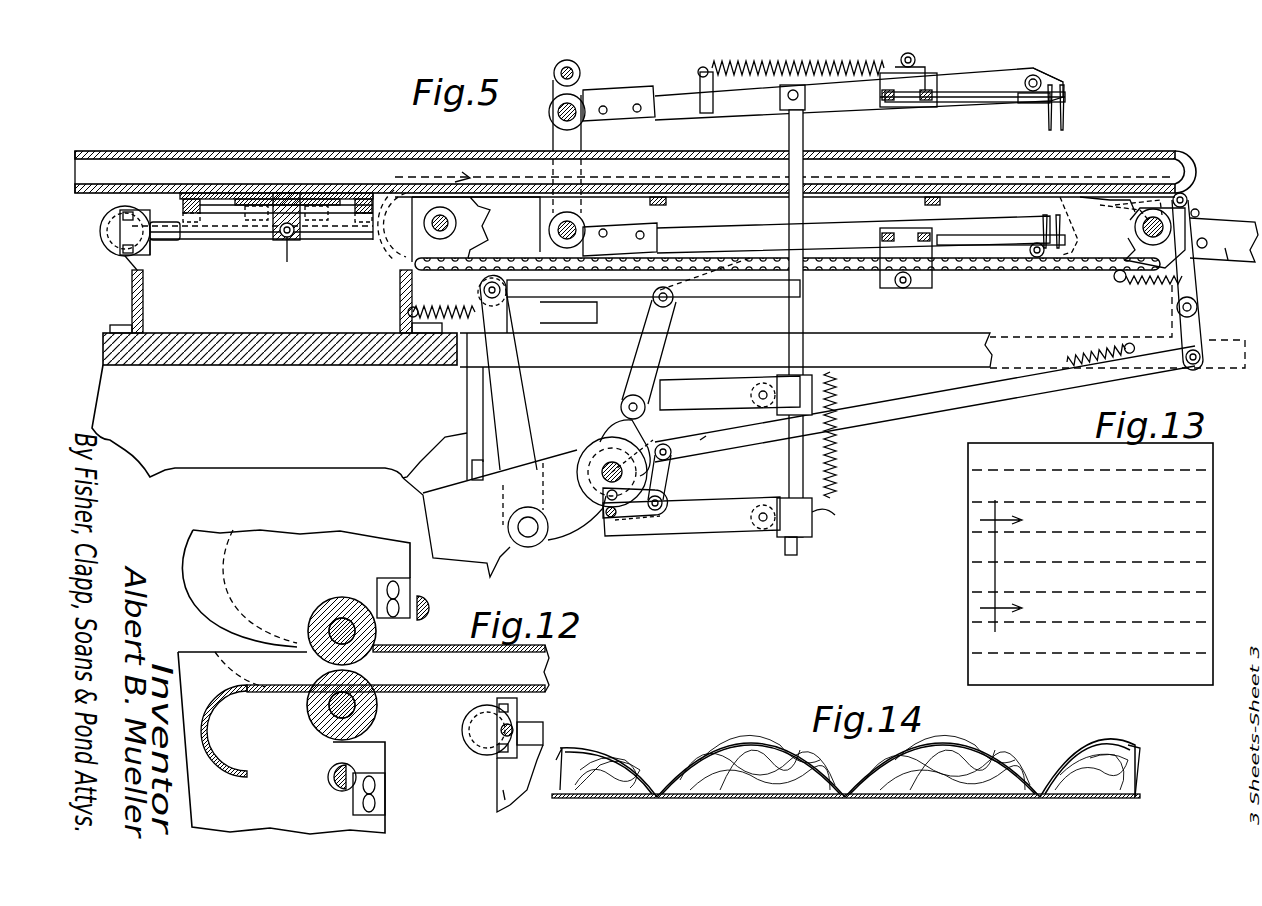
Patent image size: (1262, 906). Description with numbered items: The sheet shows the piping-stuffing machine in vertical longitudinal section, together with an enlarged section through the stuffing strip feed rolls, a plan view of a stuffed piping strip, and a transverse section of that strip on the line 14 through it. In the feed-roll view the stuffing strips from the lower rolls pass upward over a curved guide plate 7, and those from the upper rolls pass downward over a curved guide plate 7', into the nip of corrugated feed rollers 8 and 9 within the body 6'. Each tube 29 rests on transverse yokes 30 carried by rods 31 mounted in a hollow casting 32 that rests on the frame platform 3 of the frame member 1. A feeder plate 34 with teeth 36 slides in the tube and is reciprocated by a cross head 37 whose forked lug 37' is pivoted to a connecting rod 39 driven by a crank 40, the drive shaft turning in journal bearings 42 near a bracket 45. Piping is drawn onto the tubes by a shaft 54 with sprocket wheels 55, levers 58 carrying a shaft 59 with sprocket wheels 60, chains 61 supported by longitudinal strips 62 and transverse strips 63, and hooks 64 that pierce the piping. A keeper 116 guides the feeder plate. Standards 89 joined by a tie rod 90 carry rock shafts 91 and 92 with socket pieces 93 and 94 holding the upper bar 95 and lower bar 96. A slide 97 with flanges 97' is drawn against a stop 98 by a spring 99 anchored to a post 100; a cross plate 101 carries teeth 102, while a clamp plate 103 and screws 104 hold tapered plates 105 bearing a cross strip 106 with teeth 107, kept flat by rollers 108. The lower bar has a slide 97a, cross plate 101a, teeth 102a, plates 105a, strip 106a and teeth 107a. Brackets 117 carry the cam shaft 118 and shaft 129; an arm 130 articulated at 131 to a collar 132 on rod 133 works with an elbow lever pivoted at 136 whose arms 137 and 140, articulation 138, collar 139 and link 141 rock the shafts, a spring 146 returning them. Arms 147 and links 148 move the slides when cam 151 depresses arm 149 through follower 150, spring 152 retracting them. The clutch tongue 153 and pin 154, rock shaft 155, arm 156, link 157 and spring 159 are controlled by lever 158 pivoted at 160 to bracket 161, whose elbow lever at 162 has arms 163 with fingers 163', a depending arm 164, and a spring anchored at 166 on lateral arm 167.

In FIG. 5, the frame member 1 is at (458, 402).
In FIG. 5, the frame platform 3 is at (392, 366).
In FIG. 12, the body wall 6' is at (284, 577).
In FIG. 12, the curved guide plate 7 is at (281, 743).
In FIG. 12, the curved guide plate 7' is at (256, 608).
In FIG. 12, the corrugated feed roller 8 is at (340, 598).
In FIG. 12, the corrugated feed roller 9 is at (372, 712).
In FIG. 13, the main gear 14 is at (1022, 566).
In FIG. 5, the tube 29 is at (305, 151).
In FIG. 12, the tube 29 is at (435, 645).
In FIG. 5, the transverse yoke 30 is at (362, 198).
In FIG. 5, the rod 31 is at (218, 214).
In FIG. 5, the hollow casting 32 is at (255, 267).
In FIG. 12, the hollow casting 32 is at (503, 792).
In FIG. 5, the feeder plate 34 is at (232, 192).
In FIG. 5, the teeth 36 is at (340, 182).
In FIG. 5, the cross head 37 is at (297, 229).
In FIG. 5, the forked depending lug 37' is at (298, 263).
In FIG. 5, the connecting rod 39 is at (238, 240).
In FIG. 12, the connecting rod 39 is at (543, 730).
In FIG. 5, the crank 40 is at (104, 245).
In FIG. 12, the crank 40 is at (470, 717).
In FIG. 5, the journal bearing 42 is at (118, 262).
In FIG. 12, the journal bearing 42 is at (494, 762).
In FIG. 5, the bracket 45 is at (120, 222).
In FIG. 12, the bracket 45 is at (497, 732).
In FIG. 5, the shaft 54 is at (456, 220).
In FIG. 5, the sprocket wheel 55 is at (478, 236).
In FIG. 5, the lever 58 is at (1233, 262).
In FIG. 5, the shaft 59 is at (1135, 230).
In FIG. 5, the sprocket wheel 60 is at (1125, 252).
In FIG. 5, the sprocket chain 61 is at (505, 258).
In FIG. 5, the longitudinal strip 62 is at (760, 257).
In FIG. 5, the transverse strip 63 is at (660, 196).
In FIG. 5, the hook 64 is at (470, 178).
In FIG. 5, the standard 89 is at (582, 136).
In FIG. 5, the tie rod 90 is at (555, 70).
In FIG. 5, the upper rock shaft 91 is at (549, 110).
In FIG. 5, the lower rock shaft 92 is at (552, 222).
In FIG. 5, the socket piece 93 is at (620, 92).
In FIG. 5, the socket piece 94 is at (618, 240).
In FIG. 5, the upper bar 95 is at (838, 100).
In FIG. 5, the lower bar 96 is at (836, 238).
In FIG. 5, the slide 97 is at (920, 58).
In FIG. 5, the lateral flange 97' is at (939, 68).
In FIG. 5, the slide 97a is at (912, 283).
In FIG. 5, the stop 98 is at (876, 100).
In FIG. 5, the pull spring 99 is at (735, 75).
In FIG. 5, the post 100 is at (700, 70).
In FIG. 5, the cross plate 101 is at (1028, 92).
In FIG. 5, the cross plate 101a is at (1036, 243).
In FIG. 5, the depending teeth 102 is at (1047, 112).
In FIG. 5, the upstanding teeth 102a is at (1043, 224).
In FIG. 5, the clamp plate 103 is at (912, 108).
In FIG. 5, the screw 104 is at (955, 103).
In FIG. 5, the tapered plate 105 is at (985, 105).
In FIG. 5, the plate 105a is at (968, 235).
In FIG. 5, the cross strip 106 is at (1065, 95).
In FIG. 5, the cross strip 106a is at (1125, 214).
In FIG. 5, the teeth 107 is at (1064, 118).
In FIG. 5, the upstanding teeth 107a is at (1060, 197).
In FIG. 5, the roller 108 is at (1064, 65).
In FIG. 5, the keeper 116 is at (1185, 152).
In FIG. 5, the bracket 117 is at (548, 460).
In FIG. 5, the cam shaft 118 is at (600, 478).
In FIG. 5, the shaft 129 is at (528, 540).
In FIG. 5, the arm 130 is at (722, 530).
In FIG. 5, the articulation 131 is at (763, 505).
In FIG. 5, the collar 132 is at (812, 530).
In FIG. 5, the vertical rod 133 is at (803, 315).
In FIG. 5, the pivot 136 is at (648, 382).
In FIG. 5, the arm 137 is at (703, 452).
In FIG. 5, the articulation 138 is at (763, 383).
In FIG. 5, the collar 139 is at (805, 380).
In FIG. 5, the arm 140 is at (668, 322).
In FIG. 5, the link 141 is at (675, 207).
In FIG. 5, the pull spring 146 is at (836, 478).
In FIG. 5, the arm 147 is at (520, 388).
In FIG. 5, the link 148 is at (737, 290).
In FIG. 5, the arm 149 is at (575, 548).
In FIG. 5, the cam follower 150 is at (618, 518).
In FIG. 5, the cam 151 is at (600, 425).
In FIG. 5, the pull spring 152 is at (458, 310).
In FIG. 5, the tongue 153 is at (660, 516).
In FIG. 5, the clutch pin 154 is at (646, 444).
In FIG. 5, the rock shaft 155 is at (668, 502).
In FIG. 5, the arm 156 is at (672, 472).
In FIG. 5, the link 157 is at (897, 408).
In FIG. 5, the lever 158 is at (1195, 288).
In FIG. 5, the pull spring 159 is at (1070, 358).
In FIG. 5, the pivot 160 is at (1198, 307).
In FIG. 5, the bracket 161 is at (1172, 312).
In FIG. 5, the pivot 162 is at (1190, 200).
In FIG. 5, the arm 163 is at (1130, 189).
In FIG. 5, the finger 163' is at (1098, 184).
In FIG. 5, the depending arm 164 is at (1200, 213).
In FIG. 5, the anchor 166 is at (1224, 240).
In FIG. 5, the lateral arm 167 is at (1130, 282).